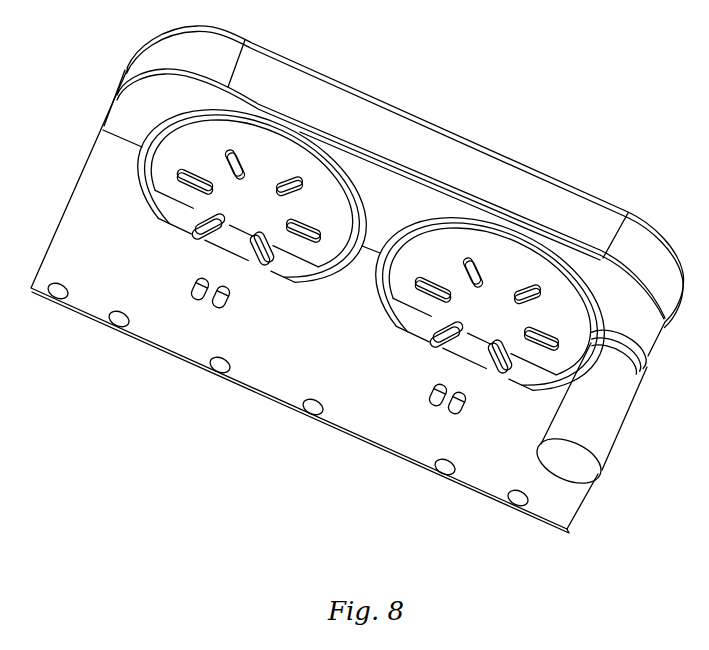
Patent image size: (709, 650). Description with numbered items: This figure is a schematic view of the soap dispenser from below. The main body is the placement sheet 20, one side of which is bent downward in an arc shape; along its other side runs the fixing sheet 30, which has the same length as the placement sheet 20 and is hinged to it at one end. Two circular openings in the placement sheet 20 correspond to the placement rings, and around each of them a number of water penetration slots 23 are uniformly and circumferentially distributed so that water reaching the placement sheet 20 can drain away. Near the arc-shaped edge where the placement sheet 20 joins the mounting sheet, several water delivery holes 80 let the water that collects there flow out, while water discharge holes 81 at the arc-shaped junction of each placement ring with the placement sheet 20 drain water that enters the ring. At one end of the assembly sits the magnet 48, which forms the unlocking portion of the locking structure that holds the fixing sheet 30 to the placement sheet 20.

The placement sheet 20 is at (292, 368).
The water penetration slots 23 is at (262, 262).
The fixing sheet 30 is at (433, 157).
The magnet 48 is at (605, 420).
The water delivery holes 80 is at (447, 473).
The water discharge holes 81 is at (448, 417).